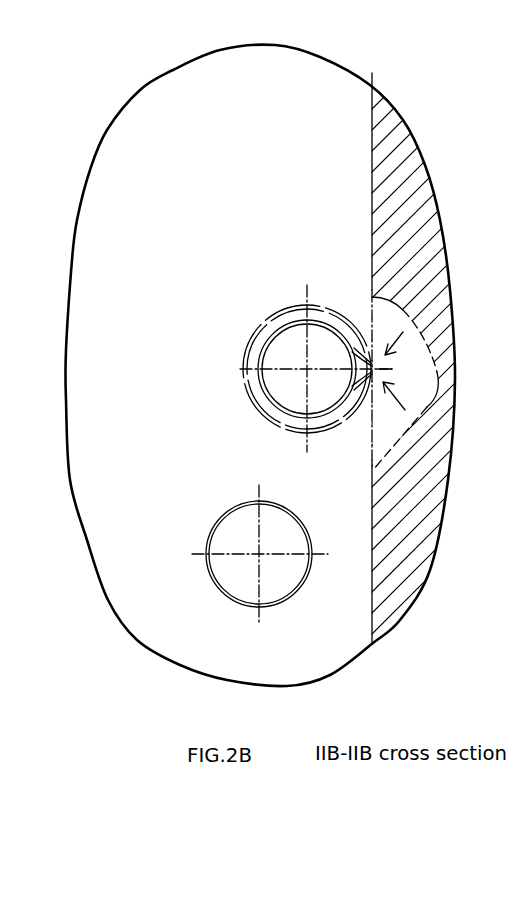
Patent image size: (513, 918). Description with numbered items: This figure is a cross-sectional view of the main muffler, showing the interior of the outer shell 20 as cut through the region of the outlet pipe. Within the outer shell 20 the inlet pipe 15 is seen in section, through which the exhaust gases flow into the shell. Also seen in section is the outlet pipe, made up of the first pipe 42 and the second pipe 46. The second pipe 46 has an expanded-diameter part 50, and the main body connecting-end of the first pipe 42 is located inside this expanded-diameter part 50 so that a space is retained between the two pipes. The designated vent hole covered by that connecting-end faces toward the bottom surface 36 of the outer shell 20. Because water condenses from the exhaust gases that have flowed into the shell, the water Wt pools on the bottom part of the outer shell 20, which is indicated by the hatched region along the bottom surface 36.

The inlet pipe 15 is at (210, 570).
The outer shell 20 is at (353, 663).
The bottom surface 36 is at (433, 333).
The first pipe 42 is at (262, 393).
The second pipe 46 is at (186, 319).
The expanded-diameter part 50 is at (252, 335).
The water Wt is at (386, 136).